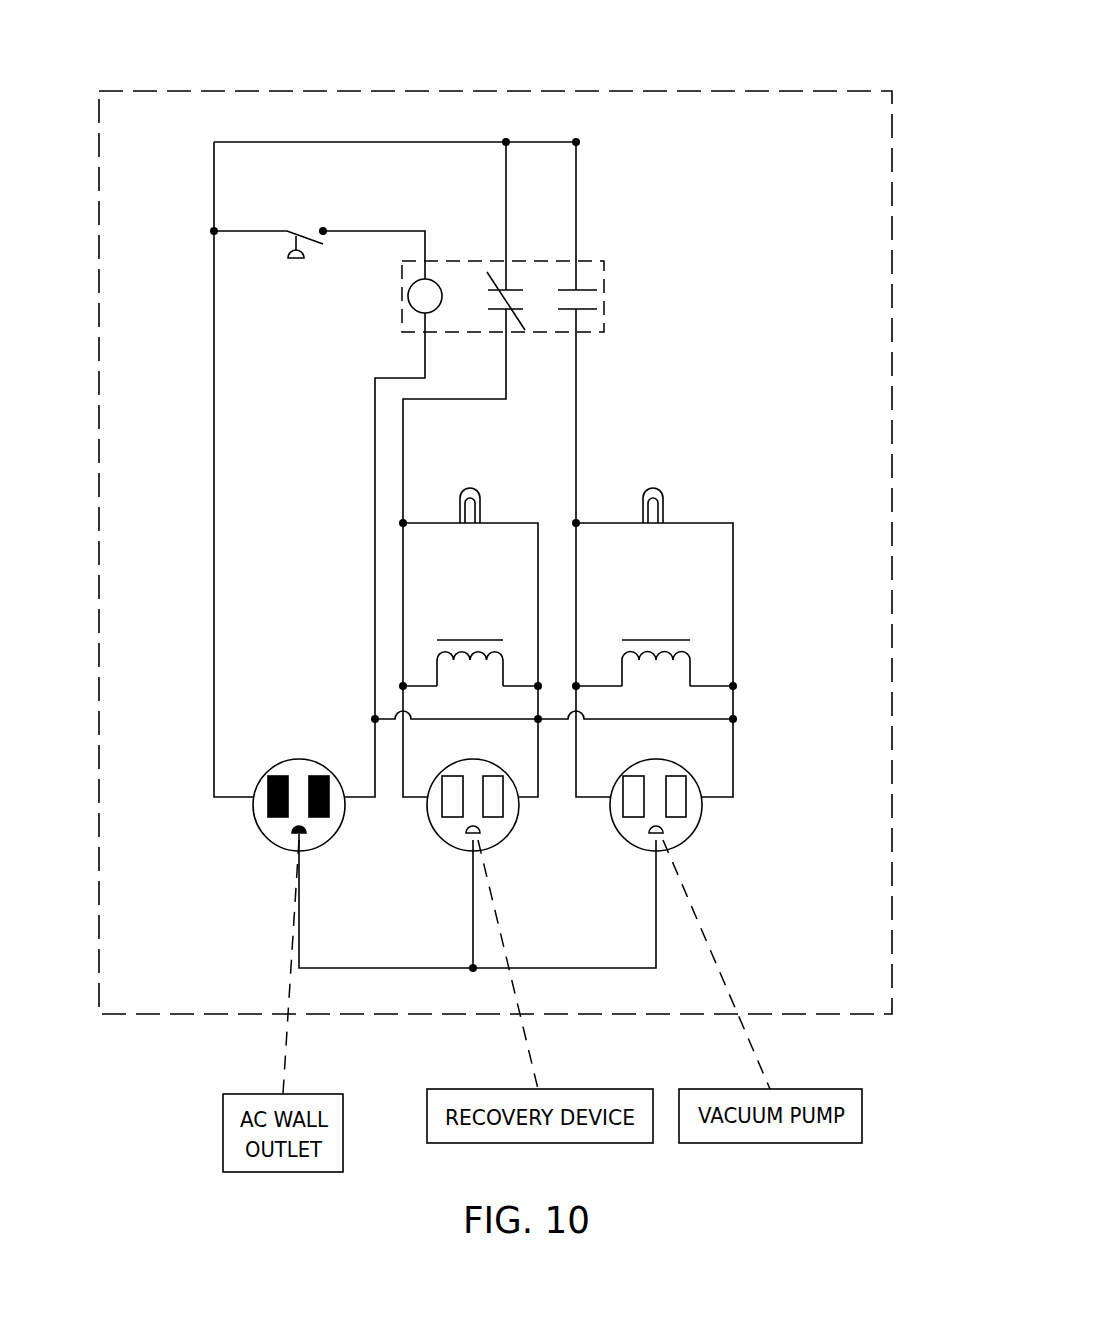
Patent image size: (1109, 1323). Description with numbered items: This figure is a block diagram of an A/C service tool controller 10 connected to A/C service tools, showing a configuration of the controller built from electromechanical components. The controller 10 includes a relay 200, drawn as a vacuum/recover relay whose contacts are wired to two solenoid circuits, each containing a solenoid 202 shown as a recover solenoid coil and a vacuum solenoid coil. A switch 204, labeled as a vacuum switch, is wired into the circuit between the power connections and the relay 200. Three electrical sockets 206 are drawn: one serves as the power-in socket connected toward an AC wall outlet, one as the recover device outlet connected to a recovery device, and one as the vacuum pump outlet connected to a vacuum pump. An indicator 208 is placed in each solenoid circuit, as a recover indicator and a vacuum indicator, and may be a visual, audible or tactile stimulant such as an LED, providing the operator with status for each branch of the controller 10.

The A/C service tool controller 10 is at (773, 57).
The relay 200 is at (458, 258).
The solenoid 202 is at (476, 658).
The switch 204 is at (310, 237).
The electrical socket 206 is at (292, 760).
The indicator 208 is at (482, 494).